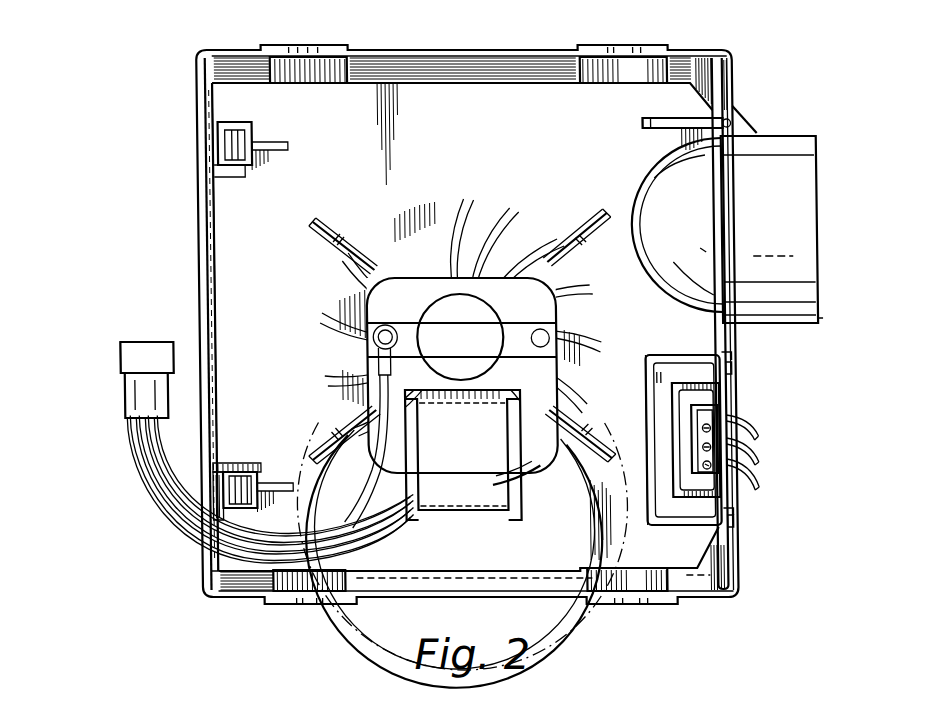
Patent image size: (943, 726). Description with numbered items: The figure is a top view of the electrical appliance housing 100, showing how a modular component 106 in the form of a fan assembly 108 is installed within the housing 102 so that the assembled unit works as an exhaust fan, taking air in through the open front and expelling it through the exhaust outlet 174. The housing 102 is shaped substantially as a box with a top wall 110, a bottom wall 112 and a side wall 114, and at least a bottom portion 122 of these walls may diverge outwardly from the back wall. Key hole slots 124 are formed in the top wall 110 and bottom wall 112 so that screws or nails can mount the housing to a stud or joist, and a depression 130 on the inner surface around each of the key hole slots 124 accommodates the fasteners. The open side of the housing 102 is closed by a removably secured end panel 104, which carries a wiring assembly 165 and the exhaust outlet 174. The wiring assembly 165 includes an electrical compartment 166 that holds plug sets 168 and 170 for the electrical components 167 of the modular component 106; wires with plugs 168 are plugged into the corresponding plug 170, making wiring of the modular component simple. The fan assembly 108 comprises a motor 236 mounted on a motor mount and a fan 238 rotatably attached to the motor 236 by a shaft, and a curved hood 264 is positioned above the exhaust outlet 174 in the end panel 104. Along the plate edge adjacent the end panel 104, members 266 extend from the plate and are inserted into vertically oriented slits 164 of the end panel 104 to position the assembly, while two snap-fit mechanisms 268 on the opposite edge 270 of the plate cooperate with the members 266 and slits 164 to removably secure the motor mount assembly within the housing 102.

The electrical appliance housing 100 is at (761, 78).
The housing 102 is at (676, 602).
The end panel 104 is at (735, 552).
The modular component 106 is at (361, 105).
The fan assembly 108 is at (476, 270).
The top wall 110 is at (559, 605).
The bottom wall 112 is at (458, 49).
The side wall 114 is at (197, 215).
The bottom portion 122 is at (240, 585).
The key hole slots 124 is at (300, 48).
The depression 130 is at (275, 72).
The slits 164 is at (733, 110).
The wiring assembly 165 is at (113, 395).
The electrical compartment 166 is at (697, 405).
The electrical components 167 is at (143, 490).
The plug set 168 is at (706, 437).
The plug 170 is at (123, 352).
The exhaust outlet 174 is at (816, 318).
The motor 236 is at (450, 197).
The fan 238 is at (545, 235).
The curved hood 264 is at (687, 218).
The members 266 is at (734, 125).
The snap-fit mechanism 268 is at (223, 128).
The edge 270 is at (207, 290).